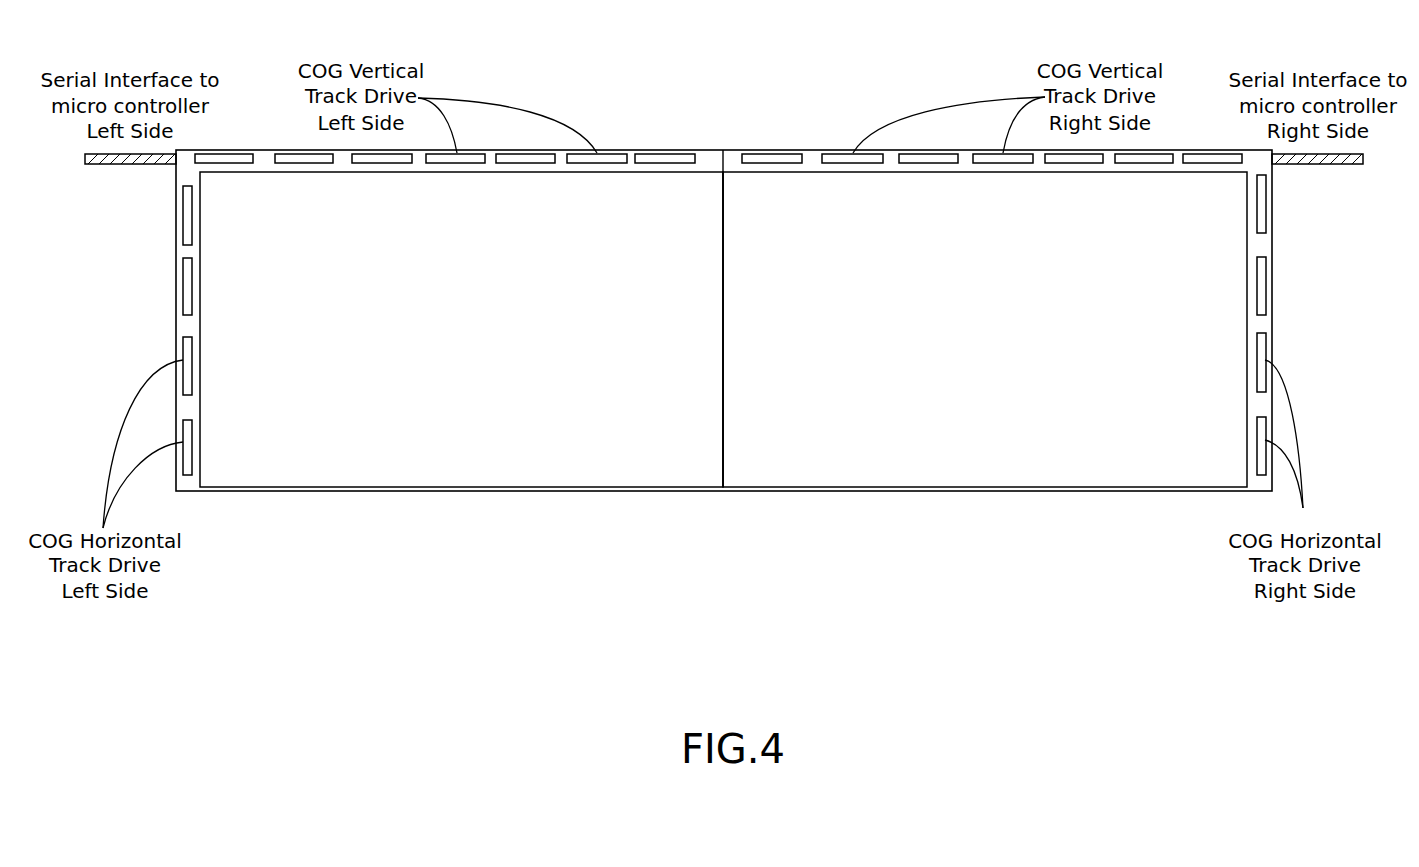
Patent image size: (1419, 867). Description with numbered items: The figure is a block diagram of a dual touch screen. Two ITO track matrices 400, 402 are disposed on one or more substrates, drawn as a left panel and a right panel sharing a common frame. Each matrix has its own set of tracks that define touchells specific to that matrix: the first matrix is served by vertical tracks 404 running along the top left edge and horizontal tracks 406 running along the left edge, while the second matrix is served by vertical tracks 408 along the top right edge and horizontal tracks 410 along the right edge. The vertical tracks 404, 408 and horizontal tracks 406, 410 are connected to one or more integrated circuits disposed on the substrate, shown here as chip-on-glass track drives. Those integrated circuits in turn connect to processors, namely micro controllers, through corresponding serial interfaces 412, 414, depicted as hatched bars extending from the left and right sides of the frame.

The ITO track matrix 400 is at (455, 473).
The ITO track matrix 402 is at (990, 473).
The vertical tracks 404 is at (304, 153).
The horizontal tracks 406 is at (183, 460).
The vertical tracks 408 is at (771, 153).
The horizontal tracks 410 is at (1265, 205).
The serial interface 412 is at (148, 165).
The serial interface 414 is at (1302, 164).